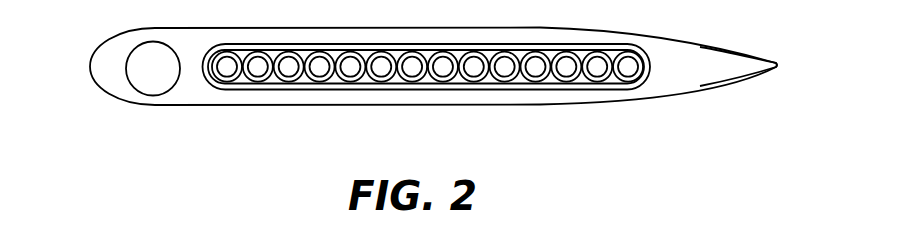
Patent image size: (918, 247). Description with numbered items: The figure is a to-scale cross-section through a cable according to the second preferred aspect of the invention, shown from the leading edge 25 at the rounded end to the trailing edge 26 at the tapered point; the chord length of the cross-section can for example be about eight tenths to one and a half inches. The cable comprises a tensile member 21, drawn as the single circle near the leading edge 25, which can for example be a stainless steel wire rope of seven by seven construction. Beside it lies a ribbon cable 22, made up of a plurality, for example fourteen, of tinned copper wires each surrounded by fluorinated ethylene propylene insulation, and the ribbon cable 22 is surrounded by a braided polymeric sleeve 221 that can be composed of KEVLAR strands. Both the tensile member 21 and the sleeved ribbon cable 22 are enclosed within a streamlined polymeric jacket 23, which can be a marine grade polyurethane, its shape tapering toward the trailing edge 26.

The tensile member 21 is at (131, 89).
The ribbon cable 22 is at (448, 83).
The braided polymeric sleeve 221 is at (275, 90).
The streamlined polymeric jacket 23 is at (353, 106).
The leading edge 25 is at (92, 66).
The trailing edge 26 is at (780, 65).